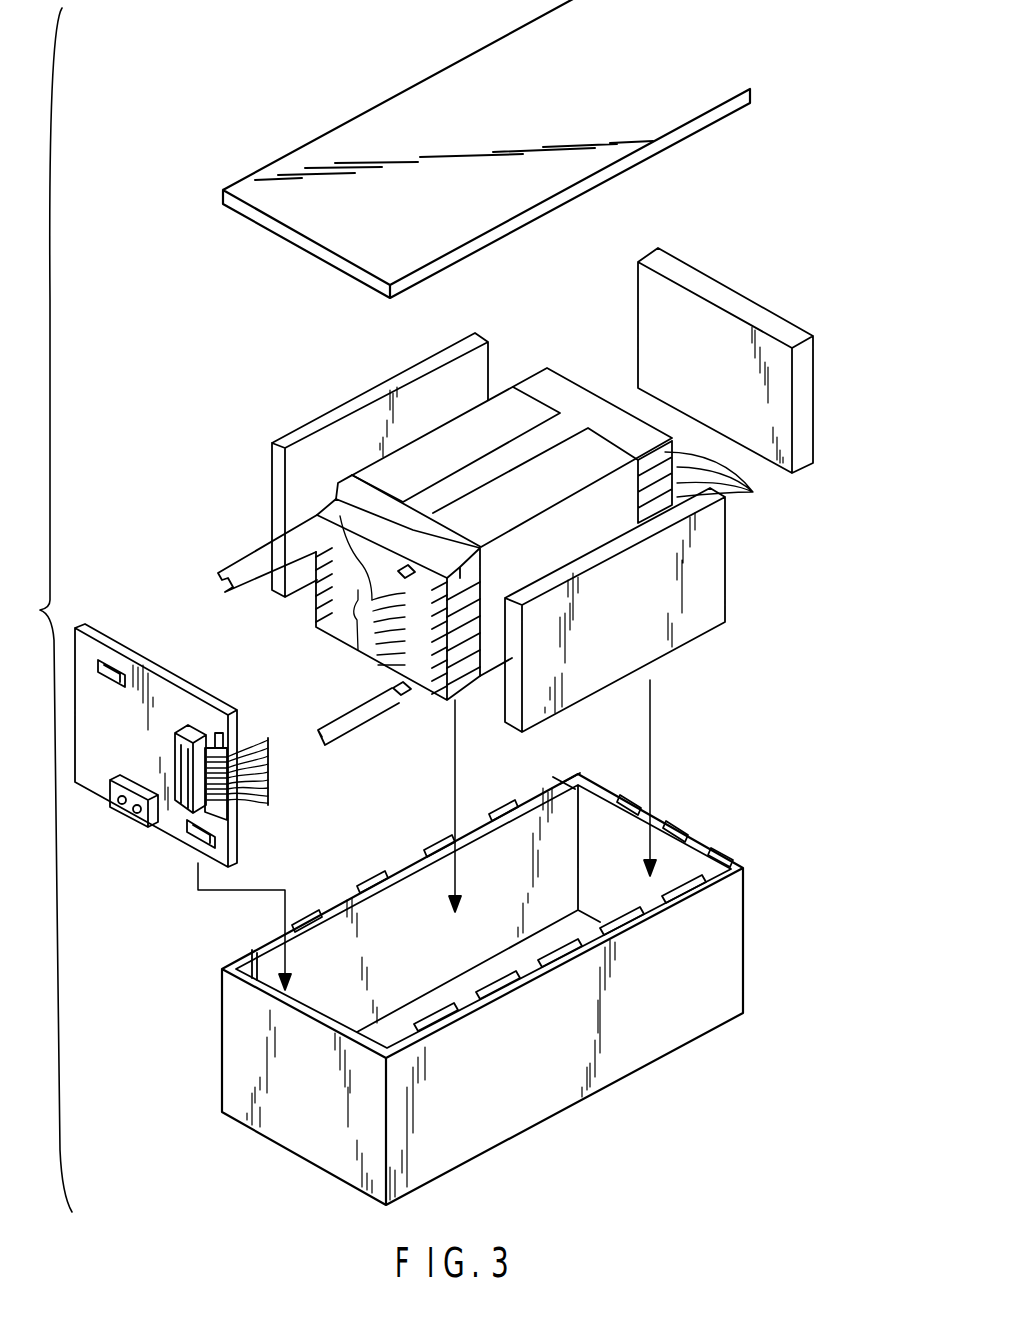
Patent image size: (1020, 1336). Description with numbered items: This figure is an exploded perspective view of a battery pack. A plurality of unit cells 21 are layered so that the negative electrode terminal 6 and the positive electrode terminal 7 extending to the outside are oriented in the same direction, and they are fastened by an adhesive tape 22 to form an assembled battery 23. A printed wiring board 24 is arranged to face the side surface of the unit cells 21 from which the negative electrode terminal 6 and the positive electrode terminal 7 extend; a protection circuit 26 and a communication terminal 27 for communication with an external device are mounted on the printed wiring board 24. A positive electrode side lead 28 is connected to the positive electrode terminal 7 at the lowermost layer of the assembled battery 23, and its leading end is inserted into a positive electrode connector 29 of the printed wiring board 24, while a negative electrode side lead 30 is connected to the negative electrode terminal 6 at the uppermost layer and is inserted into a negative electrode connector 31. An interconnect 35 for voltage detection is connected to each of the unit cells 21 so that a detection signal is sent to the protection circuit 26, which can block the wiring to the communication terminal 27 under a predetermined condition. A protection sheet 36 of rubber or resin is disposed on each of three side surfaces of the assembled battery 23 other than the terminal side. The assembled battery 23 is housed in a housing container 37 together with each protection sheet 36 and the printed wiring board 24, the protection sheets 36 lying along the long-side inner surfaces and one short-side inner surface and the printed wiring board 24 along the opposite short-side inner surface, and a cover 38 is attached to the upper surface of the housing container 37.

The cover 38 is at (688, 77).
The assembled battery 23 is at (431, 428).
The adhesive tape 22 is at (575, 462).
The protection sheet 36 is at (344, 412).
The unit cell 21 is at (724, 478).
The negative electrode terminal 6 is at (316, 512).
The positive electrode terminal 7 is at (403, 698).
The negative electrode side lead 30 is at (233, 560).
The positive electrode side lead 28 is at (355, 730).
The interconnect for voltage detection 35 is at (349, 622).
The printed wiring board 24 is at (108, 618).
The negative electrode connector 31 is at (119, 672).
The positive electrode connector 29 is at (215, 838).
The protection circuit 26 is at (192, 732).
The communication terminal 27 is at (136, 820).
The housing container 37 is at (730, 945).